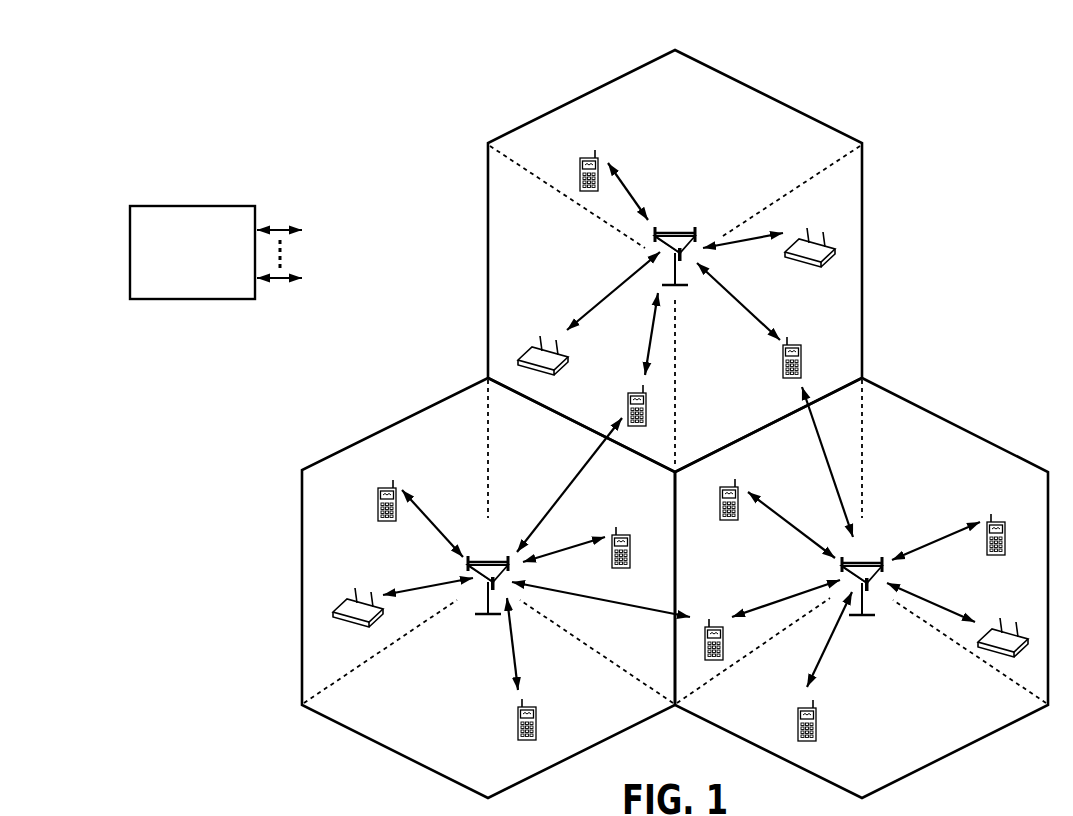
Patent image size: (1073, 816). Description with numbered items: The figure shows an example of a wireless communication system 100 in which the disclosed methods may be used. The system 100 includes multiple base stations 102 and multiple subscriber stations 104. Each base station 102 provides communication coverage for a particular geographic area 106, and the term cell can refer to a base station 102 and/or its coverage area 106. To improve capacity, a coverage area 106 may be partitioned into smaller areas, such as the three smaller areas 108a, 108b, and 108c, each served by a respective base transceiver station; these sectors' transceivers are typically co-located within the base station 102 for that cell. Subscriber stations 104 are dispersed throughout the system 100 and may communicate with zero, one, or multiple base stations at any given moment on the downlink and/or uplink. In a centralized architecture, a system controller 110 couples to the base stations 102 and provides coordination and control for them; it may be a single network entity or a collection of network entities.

The wireless communication system 100 is at (992, 110).
The base station 102 is at (672, 232).
The subscriber station 104 is at (580, 167).
The geographic area 106 is at (770, 92).
The smaller area 108a is at (657, 103).
The smaller area 108b is at (501, 236).
The smaller area 108c is at (719, 416).
The system controller 110 is at (190, 205).